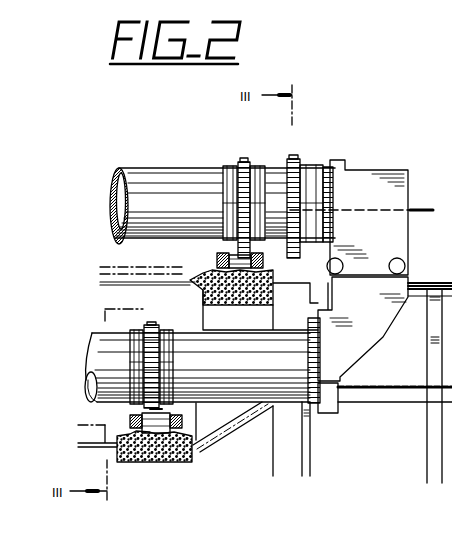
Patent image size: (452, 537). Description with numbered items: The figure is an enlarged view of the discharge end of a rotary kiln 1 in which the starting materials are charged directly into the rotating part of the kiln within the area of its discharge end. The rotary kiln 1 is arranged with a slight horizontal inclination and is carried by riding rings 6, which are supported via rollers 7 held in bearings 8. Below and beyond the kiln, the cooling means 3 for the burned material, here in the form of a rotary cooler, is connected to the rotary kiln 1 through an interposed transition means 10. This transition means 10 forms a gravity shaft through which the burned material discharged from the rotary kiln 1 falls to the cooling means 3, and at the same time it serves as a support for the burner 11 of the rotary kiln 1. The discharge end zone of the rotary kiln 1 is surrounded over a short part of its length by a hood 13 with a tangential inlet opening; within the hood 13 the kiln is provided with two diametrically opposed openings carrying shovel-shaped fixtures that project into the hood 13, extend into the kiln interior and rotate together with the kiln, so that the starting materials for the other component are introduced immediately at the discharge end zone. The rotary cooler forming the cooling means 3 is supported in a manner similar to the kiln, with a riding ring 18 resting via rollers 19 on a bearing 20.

The rotary kiln 1 is at (166, 170).
The cooling means 3 is at (268, 384).
The riding rings 6 is at (241, 160).
The rollers 7 is at (217, 266).
The bearings 8 is at (206, 306).
The transition means 10 is at (383, 170).
The burner 11 is at (430, 208).
The hood 13 is at (293, 156).
The riding ring 18 is at (151, 324).
The rollers 19 is at (150, 452).
The bearing 20 is at (192, 452).